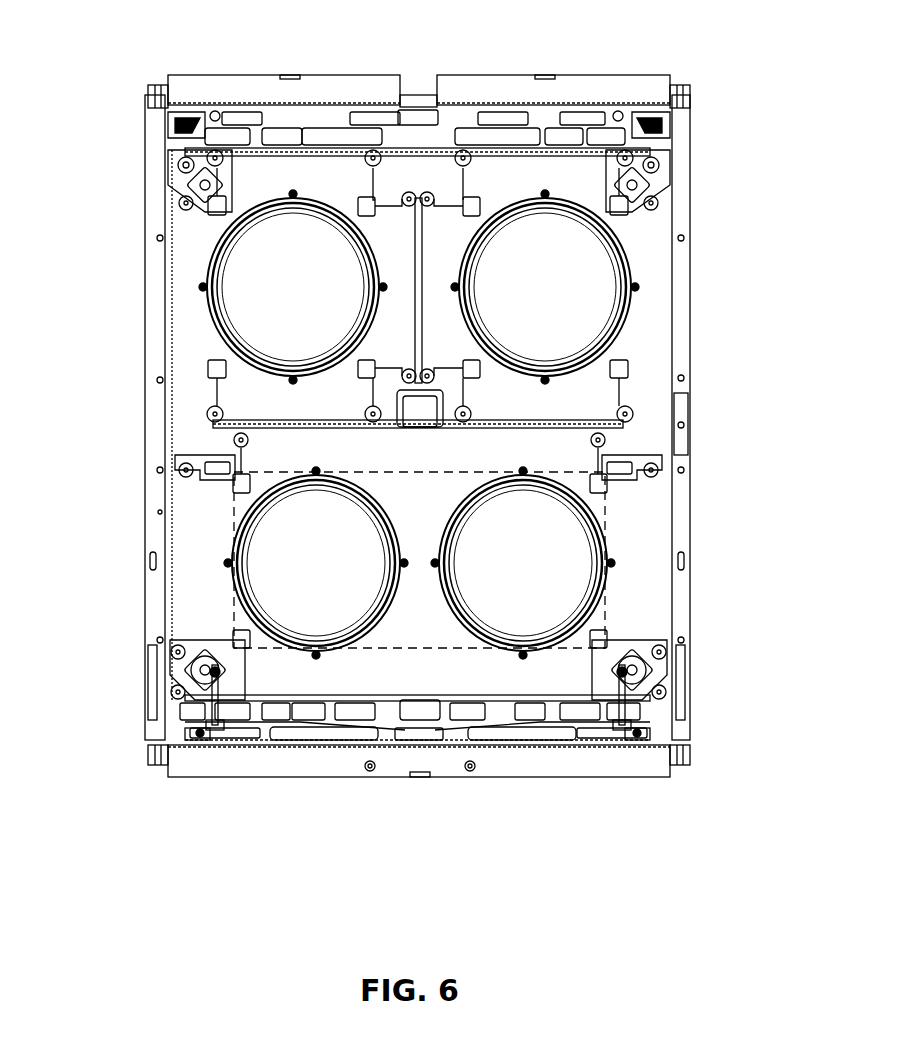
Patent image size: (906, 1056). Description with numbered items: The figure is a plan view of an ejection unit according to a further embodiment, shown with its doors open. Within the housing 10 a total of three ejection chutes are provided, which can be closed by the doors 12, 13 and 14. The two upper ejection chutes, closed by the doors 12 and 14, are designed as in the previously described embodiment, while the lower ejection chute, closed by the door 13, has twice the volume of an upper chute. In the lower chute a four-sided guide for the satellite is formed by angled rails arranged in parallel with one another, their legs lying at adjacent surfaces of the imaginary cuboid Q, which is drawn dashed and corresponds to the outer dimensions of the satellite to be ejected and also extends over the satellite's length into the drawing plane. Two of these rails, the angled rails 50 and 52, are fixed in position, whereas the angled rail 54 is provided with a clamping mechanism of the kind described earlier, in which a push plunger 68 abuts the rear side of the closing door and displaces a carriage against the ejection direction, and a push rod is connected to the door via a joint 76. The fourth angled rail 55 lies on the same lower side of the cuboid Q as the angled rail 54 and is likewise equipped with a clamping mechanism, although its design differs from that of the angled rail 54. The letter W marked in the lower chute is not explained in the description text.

The housing 10 is at (678, 336).
The door 12 is at (322, 85).
The door 14 is at (592, 88).
The door 13 is at (547, 765).
The angled rail 50 is at (233, 468).
The angled rail 52 is at (600, 467).
The angled rail 54 is at (218, 650).
The angled rail 55 is at (612, 655).
The push plunger 68 is at (222, 728).
The joint 76 is at (212, 686).
The cuboid Q is at (603, 500).
The workpiece direction W is at (238, 642).